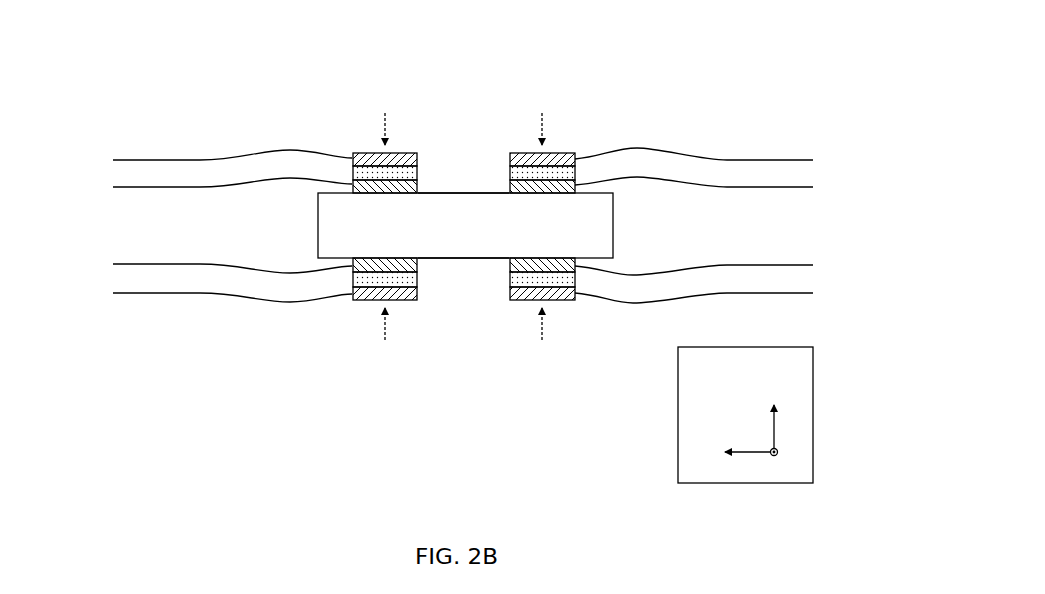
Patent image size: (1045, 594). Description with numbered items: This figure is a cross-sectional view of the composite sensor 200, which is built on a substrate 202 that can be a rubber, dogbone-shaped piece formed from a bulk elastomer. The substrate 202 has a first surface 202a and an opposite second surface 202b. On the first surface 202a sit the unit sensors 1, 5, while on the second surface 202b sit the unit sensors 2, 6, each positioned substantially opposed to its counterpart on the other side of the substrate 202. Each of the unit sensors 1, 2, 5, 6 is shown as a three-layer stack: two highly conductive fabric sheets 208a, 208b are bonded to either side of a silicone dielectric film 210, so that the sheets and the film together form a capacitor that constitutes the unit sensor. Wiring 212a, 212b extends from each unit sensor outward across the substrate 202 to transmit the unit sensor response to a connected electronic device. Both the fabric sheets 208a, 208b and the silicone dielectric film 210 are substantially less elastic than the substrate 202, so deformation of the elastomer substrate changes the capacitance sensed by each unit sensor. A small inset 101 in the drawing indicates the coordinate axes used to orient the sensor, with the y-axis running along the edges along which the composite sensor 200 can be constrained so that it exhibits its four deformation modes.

The composite sensor 200 is at (733, 65).
The substrate 202 is at (333, 238).
The first surface 202a is at (432, 193).
The second surface 202b is at (433, 259).
The conductive fabric sheet 208a is at (400, 160).
The conductive fabric sheet 208b is at (378, 187).
The silicone dielectric film 210 is at (358, 172).
The wiring 212a is at (122, 187).
The wiring 212b is at (122, 160).
The unit sensor 1 is at (385, 118).
The unit sensor 2 is at (385, 336).
The unit sensor 5 is at (542, 118).
The unit sensor 6 is at (542, 336).
The coordinate system 101 is at (678, 425).